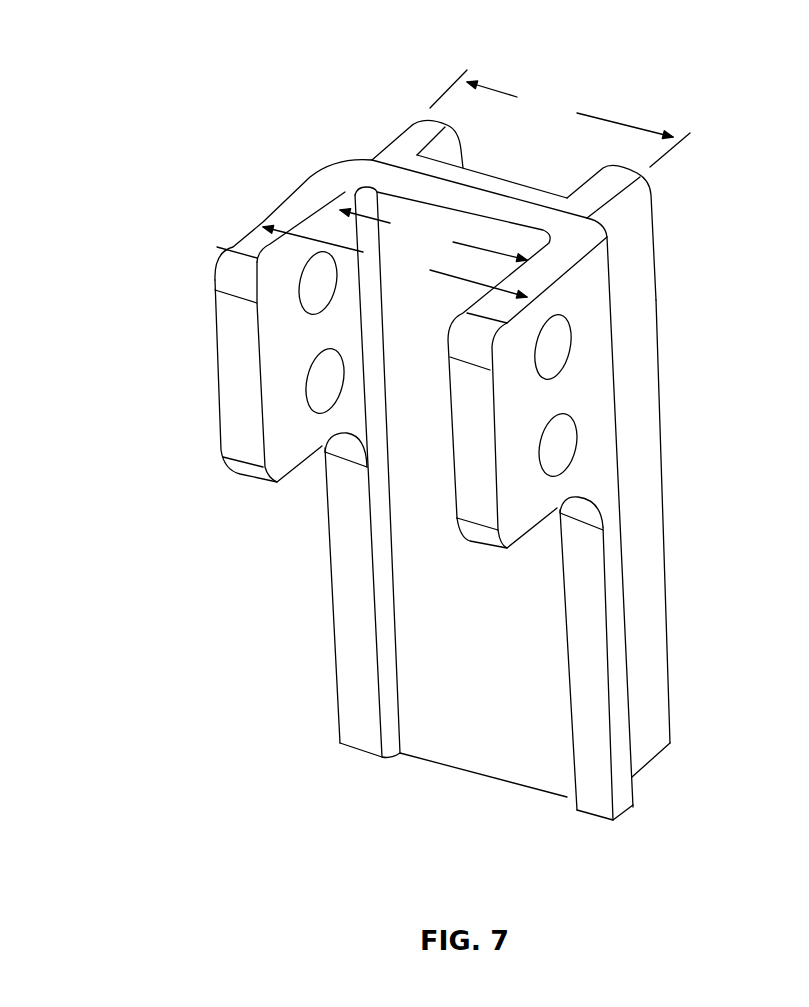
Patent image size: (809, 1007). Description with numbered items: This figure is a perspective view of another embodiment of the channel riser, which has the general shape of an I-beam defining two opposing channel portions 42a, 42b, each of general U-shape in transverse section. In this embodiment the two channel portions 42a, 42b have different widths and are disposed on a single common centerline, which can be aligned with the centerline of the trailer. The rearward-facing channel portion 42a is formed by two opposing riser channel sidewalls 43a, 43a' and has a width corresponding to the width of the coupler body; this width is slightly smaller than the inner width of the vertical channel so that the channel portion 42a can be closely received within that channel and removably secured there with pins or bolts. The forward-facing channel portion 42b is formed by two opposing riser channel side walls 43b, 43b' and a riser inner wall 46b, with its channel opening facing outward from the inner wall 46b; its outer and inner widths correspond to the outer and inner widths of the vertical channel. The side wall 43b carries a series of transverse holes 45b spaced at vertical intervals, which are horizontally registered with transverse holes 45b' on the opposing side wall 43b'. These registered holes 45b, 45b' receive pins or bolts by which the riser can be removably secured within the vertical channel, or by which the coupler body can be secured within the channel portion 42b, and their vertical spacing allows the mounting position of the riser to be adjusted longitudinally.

The channel portion 42a is at (582, 68).
The riser channel sidewall 43a is at (385, 139).
The riser channel sidewall 43a' is at (666, 232).
The riser channel side wall 43b is at (217, 364).
The riser channel side wall 43b' is at (624, 430).
The transverse holes 45b is at (234, 318).
The transverse holes 45b' is at (645, 395).
The channel portion 42b is at (302, 623).
The riser inner wall 46b is at (486, 772).